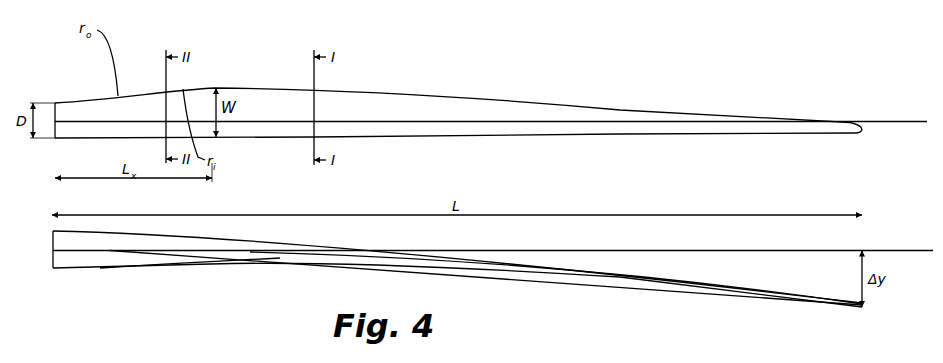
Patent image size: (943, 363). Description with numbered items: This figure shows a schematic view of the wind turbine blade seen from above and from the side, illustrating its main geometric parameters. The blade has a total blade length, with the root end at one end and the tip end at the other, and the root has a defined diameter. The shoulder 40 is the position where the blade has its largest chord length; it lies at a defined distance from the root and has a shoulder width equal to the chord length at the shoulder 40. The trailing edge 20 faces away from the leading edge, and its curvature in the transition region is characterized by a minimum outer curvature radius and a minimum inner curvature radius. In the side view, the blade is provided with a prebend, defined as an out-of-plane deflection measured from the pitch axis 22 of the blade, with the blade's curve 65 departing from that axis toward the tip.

The trailing edge 20 is at (340, 260).
The pitch axis 22 is at (374, 121).
The shoulder 40 is at (216, 88).
The pre-bend curve 65 is at (208, 259).